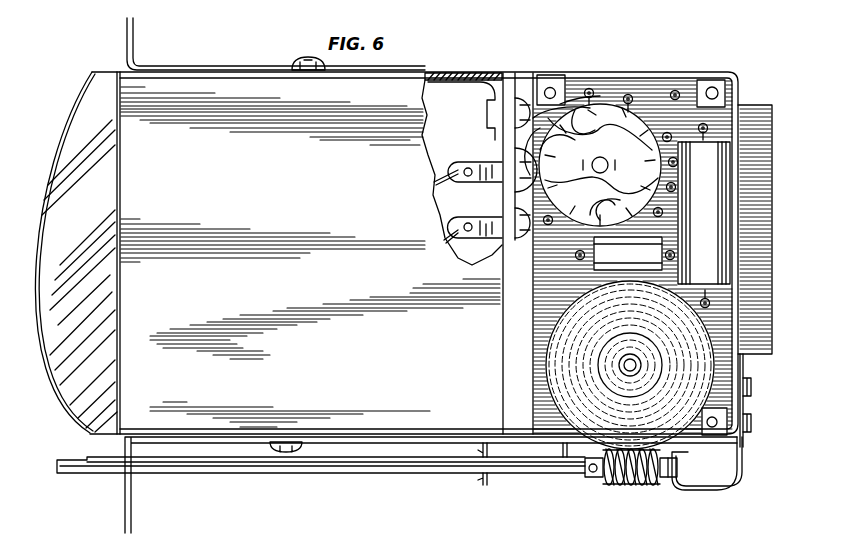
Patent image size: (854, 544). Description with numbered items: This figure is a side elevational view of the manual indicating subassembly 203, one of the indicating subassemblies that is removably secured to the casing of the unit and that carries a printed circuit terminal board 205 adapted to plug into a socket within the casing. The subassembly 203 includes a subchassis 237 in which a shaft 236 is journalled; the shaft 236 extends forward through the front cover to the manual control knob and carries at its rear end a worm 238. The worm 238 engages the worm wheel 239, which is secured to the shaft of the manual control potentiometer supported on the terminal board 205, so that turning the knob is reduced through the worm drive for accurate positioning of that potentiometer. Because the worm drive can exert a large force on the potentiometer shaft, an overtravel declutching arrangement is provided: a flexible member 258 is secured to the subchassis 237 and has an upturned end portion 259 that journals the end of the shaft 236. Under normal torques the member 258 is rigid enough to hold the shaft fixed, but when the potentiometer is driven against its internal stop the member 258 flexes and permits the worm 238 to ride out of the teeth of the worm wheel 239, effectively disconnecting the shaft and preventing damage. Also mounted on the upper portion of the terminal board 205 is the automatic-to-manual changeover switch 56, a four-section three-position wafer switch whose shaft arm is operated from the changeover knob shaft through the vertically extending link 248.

The indicating subassembly 203 is at (86, 73).
The subchassis 237 is at (292, 60).
The automatic-to-manual changeover switch 56 is at (637, 122).
The printed circuit terminal board 205 is at (781, 99).
The worm wheel 239 is at (700, 342).
The shaft 236 is at (325, 474).
The vertically extending link 248 is at (560, 452).
The worm 238 is at (630, 487).
The upturned end portion 259 is at (672, 452).
The flexible member 258 is at (738, 476).